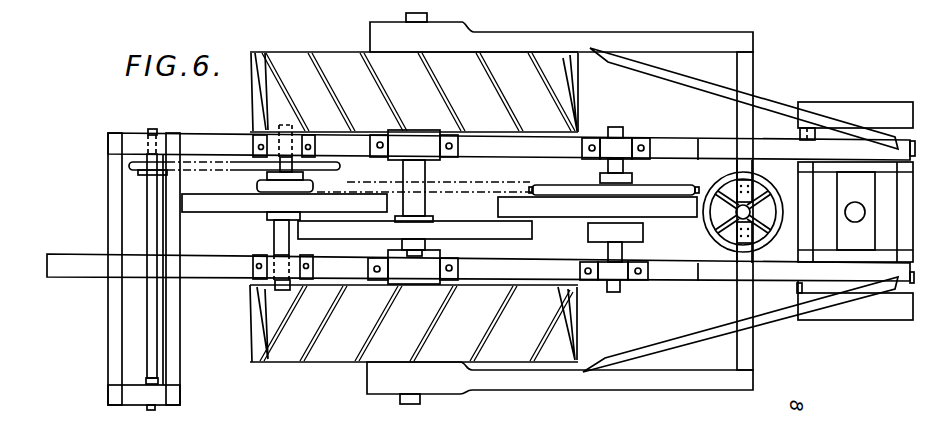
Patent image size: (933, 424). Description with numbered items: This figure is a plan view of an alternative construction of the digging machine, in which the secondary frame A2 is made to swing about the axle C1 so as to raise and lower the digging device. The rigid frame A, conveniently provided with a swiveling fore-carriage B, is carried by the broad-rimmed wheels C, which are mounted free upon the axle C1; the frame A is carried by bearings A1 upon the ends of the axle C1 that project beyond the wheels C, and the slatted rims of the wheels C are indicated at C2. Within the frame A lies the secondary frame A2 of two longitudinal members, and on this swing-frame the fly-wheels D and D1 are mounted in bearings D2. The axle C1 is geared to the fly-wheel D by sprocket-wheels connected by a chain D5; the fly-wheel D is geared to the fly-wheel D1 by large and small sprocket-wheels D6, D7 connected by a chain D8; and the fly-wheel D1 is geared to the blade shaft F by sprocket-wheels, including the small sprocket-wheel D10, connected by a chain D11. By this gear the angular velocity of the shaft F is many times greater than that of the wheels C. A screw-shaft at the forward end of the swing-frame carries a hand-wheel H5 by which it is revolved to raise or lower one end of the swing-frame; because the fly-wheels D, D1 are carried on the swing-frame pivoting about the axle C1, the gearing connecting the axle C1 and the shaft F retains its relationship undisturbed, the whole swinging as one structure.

The rigid frame A is at (690, 42).
The bearings A1 is at (411, 148).
The secondary frame A2 is at (673, 147).
The swiveling fore-carriage B is at (855, 211).
The wheels C is at (332, 68).
The axle C1 is at (386, 409).
The drum slats C2 is at (506, 103).
The fly-wheel D is at (683, 208).
The fly-wheel D1 is at (238, 207).
The bearings D2 is at (644, 299).
The chain D5 is at (575, 232).
The large sprocket-wheel D6 is at (657, 188).
The small sprocket-wheel D7 is at (316, 186).
The chain D8 is at (487, 187).
The small sprocket-wheel D10 is at (118, 140).
The chain D11 is at (234, 178).
The shaft F is at (150, 355).
The hand-wheel H5 is at (758, 176).